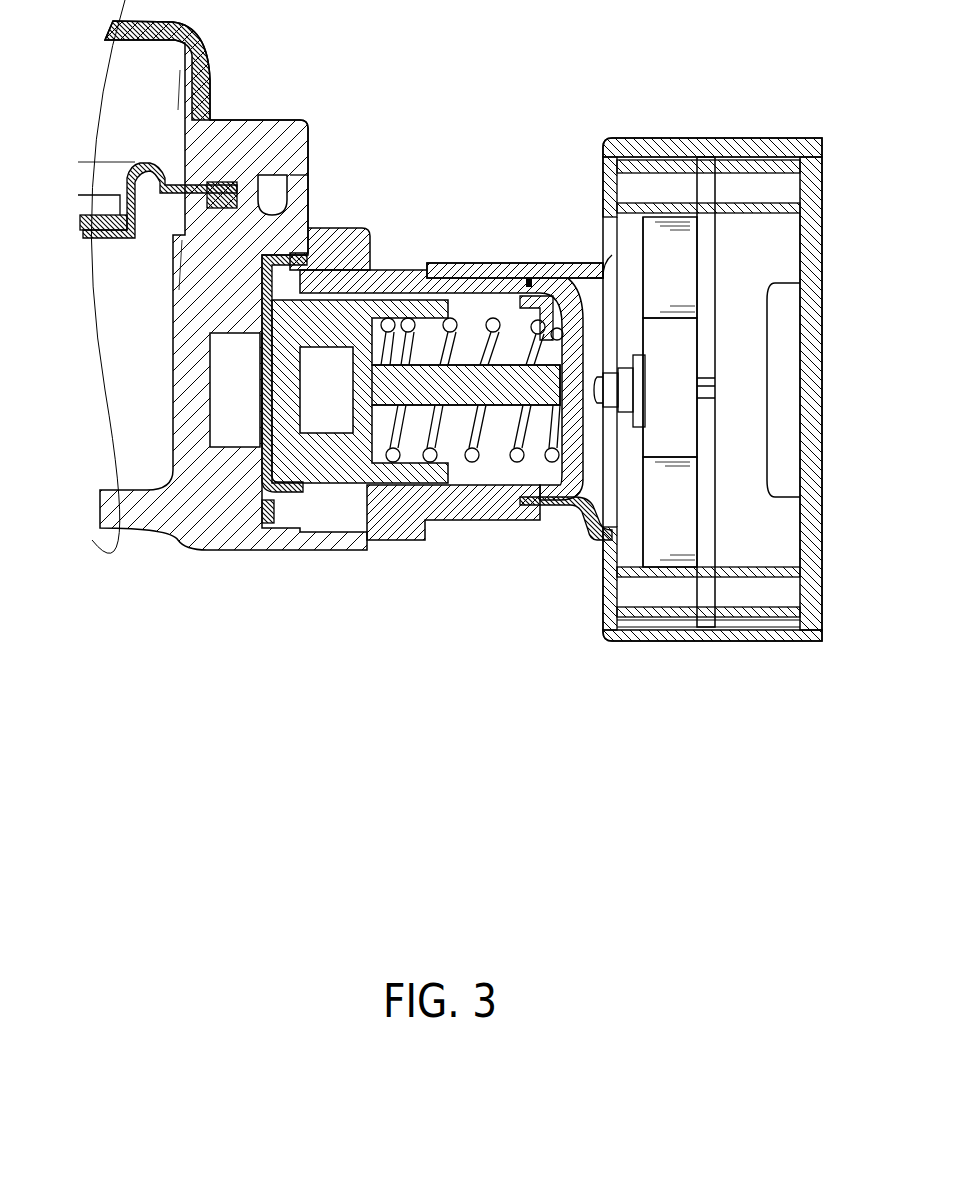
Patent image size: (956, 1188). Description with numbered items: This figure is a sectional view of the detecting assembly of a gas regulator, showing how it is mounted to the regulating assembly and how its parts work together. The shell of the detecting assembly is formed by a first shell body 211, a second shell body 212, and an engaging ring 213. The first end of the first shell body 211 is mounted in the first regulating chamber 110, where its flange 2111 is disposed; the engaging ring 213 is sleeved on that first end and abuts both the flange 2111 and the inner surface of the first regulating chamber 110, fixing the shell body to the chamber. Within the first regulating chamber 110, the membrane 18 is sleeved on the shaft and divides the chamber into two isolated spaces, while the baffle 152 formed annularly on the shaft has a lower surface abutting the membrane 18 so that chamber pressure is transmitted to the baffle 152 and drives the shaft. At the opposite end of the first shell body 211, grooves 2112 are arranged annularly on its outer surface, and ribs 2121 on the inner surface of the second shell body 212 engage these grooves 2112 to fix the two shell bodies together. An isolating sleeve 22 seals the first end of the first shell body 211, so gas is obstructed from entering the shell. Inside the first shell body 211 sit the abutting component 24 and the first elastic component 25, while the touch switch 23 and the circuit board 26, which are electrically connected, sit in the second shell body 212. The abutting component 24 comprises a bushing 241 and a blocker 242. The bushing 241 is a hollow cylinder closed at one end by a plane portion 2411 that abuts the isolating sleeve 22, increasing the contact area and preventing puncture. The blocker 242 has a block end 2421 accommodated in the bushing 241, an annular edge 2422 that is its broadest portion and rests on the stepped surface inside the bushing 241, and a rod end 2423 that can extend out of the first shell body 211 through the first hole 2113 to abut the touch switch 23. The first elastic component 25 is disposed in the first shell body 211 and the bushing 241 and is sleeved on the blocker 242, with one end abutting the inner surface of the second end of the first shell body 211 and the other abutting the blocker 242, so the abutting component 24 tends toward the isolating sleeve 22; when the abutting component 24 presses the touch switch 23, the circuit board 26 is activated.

The membrane 18 is at (108, 170).
The baffle 152 is at (92, 210).
The first regulating chamber 110 is at (253, 133).
The flange 2111 is at (310, 228).
The engaging ring 213 is at (340, 257).
The abutting component 24 is at (337, 419).
The first shell body 211 is at (500, 292).
The ribs 2121 is at (527, 283).
The grooves 2112 is at (540, 295).
The first hole 2113 is at (565, 397).
The touch switch 23 is at (597, 375).
The second shell body 212 is at (737, 142).
The circuit board 26 is at (705, 248).
The block end 2421 is at (313, 363).
The plane portion 2411 is at (263, 407).
The isolating sleeve 22 is at (253, 433).
The bushing 241 is at (327, 476).
The annular edge 2422 is at (380, 462).
The blocker 242 is at (337, 457).
The first elastic component 25 is at (478, 460).
The rod end 2423 is at (500, 397).